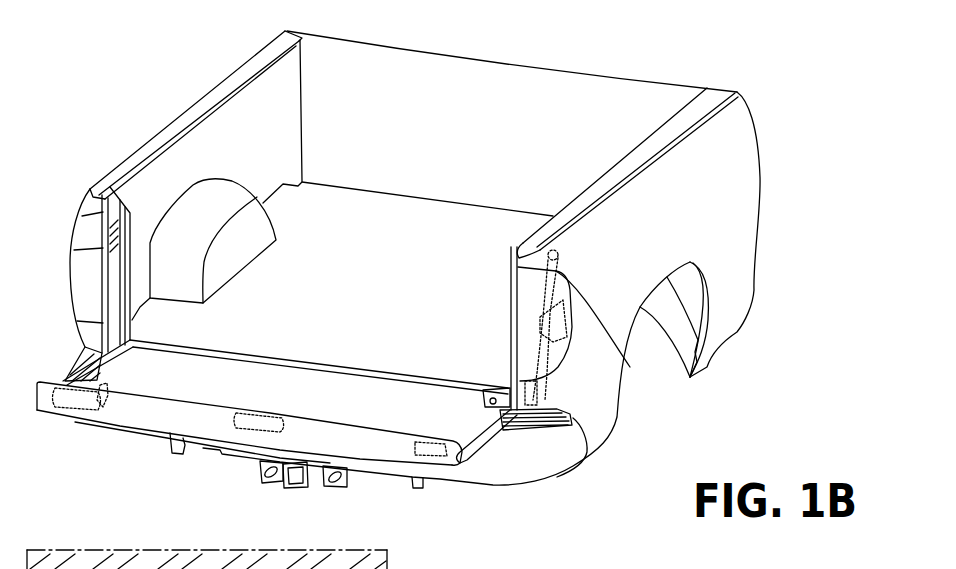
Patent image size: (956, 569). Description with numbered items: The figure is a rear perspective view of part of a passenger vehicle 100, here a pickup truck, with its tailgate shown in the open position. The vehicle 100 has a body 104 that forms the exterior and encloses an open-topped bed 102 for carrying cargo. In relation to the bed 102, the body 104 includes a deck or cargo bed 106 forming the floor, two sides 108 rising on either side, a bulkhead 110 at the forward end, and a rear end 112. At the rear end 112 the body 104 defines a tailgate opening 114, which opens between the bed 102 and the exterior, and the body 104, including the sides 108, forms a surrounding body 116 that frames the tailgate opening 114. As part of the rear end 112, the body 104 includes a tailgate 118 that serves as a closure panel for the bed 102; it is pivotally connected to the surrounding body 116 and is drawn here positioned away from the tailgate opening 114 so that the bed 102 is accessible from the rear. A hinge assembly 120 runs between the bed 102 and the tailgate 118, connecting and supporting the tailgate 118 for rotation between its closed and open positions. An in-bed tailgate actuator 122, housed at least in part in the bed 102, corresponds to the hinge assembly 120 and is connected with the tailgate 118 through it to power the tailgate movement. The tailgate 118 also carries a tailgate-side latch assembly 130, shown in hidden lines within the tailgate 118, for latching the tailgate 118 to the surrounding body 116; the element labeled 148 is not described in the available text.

The vehicle 100 is at (432, 282).
The bed 102 is at (723, 180).
The body 104 is at (758, 130).
The cargo bed 106 is at (361, 207).
The sides 108 is at (290, 163).
The bulkhead 110 is at (500, 60).
The rear end 112 is at (567, 417).
The tailgate opening 114 is at (463, 368).
The surrounding body 116 is at (628, 366).
The tailgate 118 is at (455, 462).
The hinge assembly 120 is at (525, 387).
The in-bed tailgate actuator 122 is at (560, 357).
The tailgate-side latch assembly 130 is at (112, 408).
The sensor housing 148 is at (270, 413).